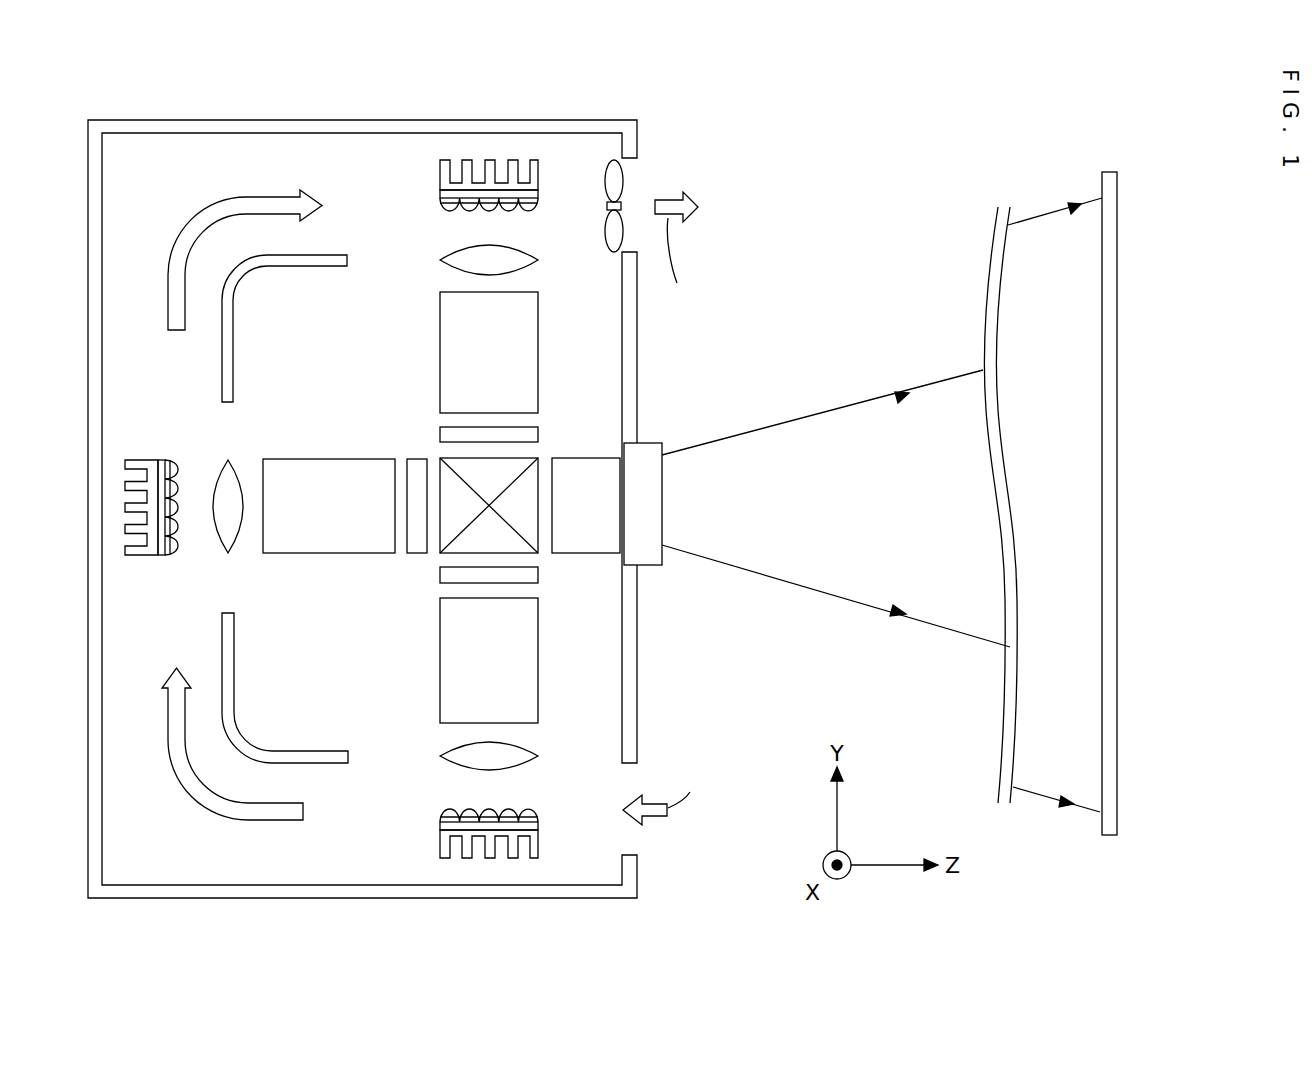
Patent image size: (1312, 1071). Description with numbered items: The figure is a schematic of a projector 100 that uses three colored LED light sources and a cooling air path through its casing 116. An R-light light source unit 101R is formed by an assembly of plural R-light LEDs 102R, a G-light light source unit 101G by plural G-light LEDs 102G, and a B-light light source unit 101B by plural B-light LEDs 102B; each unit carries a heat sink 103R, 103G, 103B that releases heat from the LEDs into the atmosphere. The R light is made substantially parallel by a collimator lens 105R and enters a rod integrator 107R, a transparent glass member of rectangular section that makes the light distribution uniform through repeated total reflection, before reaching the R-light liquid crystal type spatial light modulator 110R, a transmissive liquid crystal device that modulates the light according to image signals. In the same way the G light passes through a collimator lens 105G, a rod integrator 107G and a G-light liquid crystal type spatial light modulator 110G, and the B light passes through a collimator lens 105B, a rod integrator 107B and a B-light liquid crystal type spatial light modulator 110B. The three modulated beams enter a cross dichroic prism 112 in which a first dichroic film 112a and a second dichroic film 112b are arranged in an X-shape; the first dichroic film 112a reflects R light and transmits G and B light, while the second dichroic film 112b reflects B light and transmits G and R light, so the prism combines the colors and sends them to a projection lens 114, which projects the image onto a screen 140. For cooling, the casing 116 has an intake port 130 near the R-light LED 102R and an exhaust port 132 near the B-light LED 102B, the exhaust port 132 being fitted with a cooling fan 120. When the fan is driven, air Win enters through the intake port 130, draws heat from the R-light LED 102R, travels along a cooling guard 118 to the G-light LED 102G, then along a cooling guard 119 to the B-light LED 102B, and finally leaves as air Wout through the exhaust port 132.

The projector 100 is at (785, 163).
The B-light light source unit 101B is at (470, 195).
The G-light light source unit 101G is at (178, 504).
The R-light light source unit 101R is at (473, 824).
The B-light LED 102B is at (530, 212).
The G-light LED 102G is at (170, 555).
The R-light LED 102R is at (538, 812).
The heat sink 103B is at (538, 162).
The heat sink 103G is at (132, 555).
The heat sink 103R is at (538, 846).
The collimator lens 105B is at (440, 258).
The collimator lens 105G is at (228, 460).
The collimator lens 105R is at (535, 758).
The rod integrator 107B is at (440, 338).
The rod integrator 107G is at (318, 459).
The rod integrator 107R is at (538, 680).
The B-light liquid crystal type spatial light modulator 110B is at (540, 430).
The G-light liquid crystal type spatial light modulator 110G is at (417, 555).
The R-light liquid crystal type spatial light modulator 110R is at (540, 578).
The cross dichroic prism 112 is at (490, 514).
The first dichroic film 112a is at (455, 545).
The second dichroic film 112b is at (452, 468).
The projection lens 114 is at (648, 567).
The casing 116 is at (545, 120).
The cooling guard 118 is at (256, 752).
The cooling guard 119 is at (233, 295).
The cooling fan 120 is at (620, 180).
The intake port 130 is at (640, 855).
The exhaust port 132 is at (640, 250).
The screen 140 is at (1108, 836).